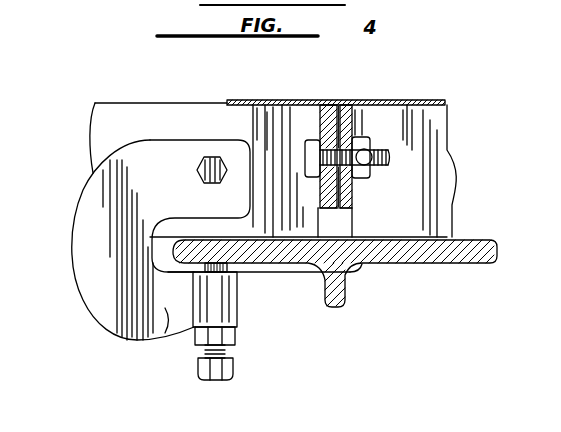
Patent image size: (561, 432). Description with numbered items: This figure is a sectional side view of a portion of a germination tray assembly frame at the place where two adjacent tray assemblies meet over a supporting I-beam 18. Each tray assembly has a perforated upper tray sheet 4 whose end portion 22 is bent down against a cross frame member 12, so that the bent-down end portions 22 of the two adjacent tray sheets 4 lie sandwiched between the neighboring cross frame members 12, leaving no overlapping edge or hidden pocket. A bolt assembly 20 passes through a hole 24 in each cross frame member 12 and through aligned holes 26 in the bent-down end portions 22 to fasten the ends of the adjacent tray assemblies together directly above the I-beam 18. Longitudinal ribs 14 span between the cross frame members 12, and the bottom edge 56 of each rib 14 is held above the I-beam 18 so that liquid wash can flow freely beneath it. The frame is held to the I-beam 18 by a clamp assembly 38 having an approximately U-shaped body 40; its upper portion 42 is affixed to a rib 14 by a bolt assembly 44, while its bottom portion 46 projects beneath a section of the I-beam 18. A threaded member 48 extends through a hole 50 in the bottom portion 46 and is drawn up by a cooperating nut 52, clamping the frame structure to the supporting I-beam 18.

The tray sheet 4 is at (273, 100).
The cross frame member 12 is at (318, 121).
The longitudinal rib 14 is at (110, 134).
The substructure I-beam 18 is at (323, 256).
The bolt assembly 20 is at (370, 162).
The end portion of tray sheet 22 is at (330, 104).
The hole 24 is at (376, 147).
The aligned hole 26 is at (346, 180).
The clamp assembly 38 is at (108, 231).
The U-shaped body 40 is at (93, 285).
The upper portion 42 is at (180, 158).
The bolt assembly 44 is at (218, 160).
The bottom portion 46 is at (160, 343).
The threaded member 48 is at (232, 354).
The hole 50 is at (222, 296).
The nut 52 is at (236, 332).
The bottom edge of rib 56 is at (275, 241).